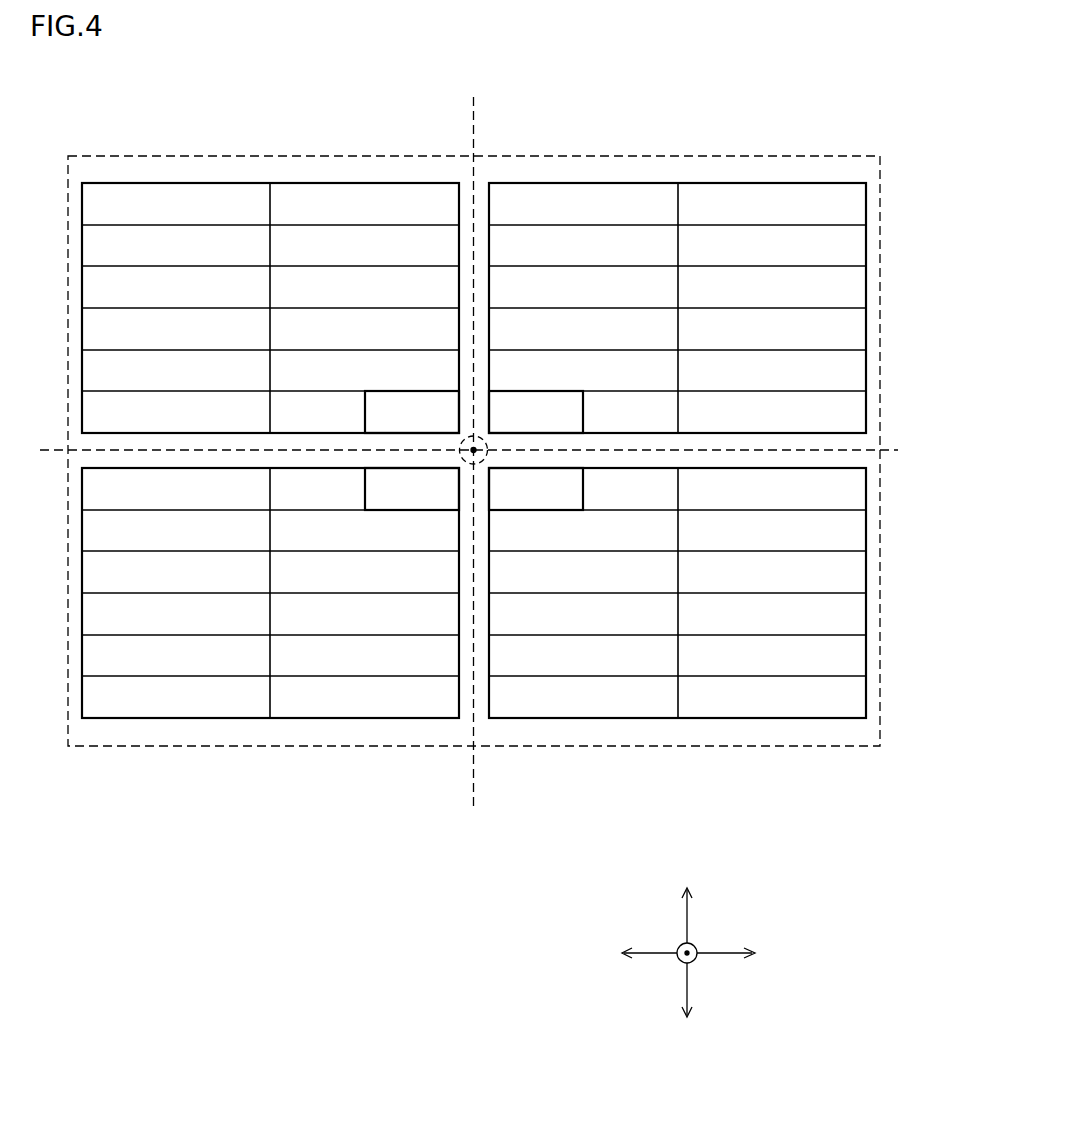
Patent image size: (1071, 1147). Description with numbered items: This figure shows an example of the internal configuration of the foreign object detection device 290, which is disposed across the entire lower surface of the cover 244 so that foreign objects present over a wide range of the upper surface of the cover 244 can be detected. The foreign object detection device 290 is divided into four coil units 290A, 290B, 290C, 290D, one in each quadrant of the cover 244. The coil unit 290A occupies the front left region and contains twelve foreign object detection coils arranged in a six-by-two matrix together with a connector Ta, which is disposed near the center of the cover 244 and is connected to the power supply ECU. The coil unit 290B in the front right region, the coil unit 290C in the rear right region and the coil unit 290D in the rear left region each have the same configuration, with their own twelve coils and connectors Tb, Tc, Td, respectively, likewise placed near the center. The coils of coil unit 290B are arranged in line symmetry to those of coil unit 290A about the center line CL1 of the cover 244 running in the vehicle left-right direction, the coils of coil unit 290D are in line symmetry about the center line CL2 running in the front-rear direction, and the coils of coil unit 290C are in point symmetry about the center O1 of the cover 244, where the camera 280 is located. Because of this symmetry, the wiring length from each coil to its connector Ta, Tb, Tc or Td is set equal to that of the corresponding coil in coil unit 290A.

The foreign object detection device 290 is at (134, 71).
The coil unit 290A is at (270, 176).
The coil unit 290B is at (683, 176).
The coil unit 290C is at (683, 725).
The coil unit 290D is at (270, 725).
The camera 280 is at (488, 450).
The cover 244 is at (847, 747).
The connector Ta is at (432, 391).
The connector Tb is at (512, 391).
The connector Tc is at (512, 510).
The connector Td is at (432, 510).
The center line CL1 is at (474, 441).
The center line CL2 is at (492, 451).
The center O1 is at (474, 453).